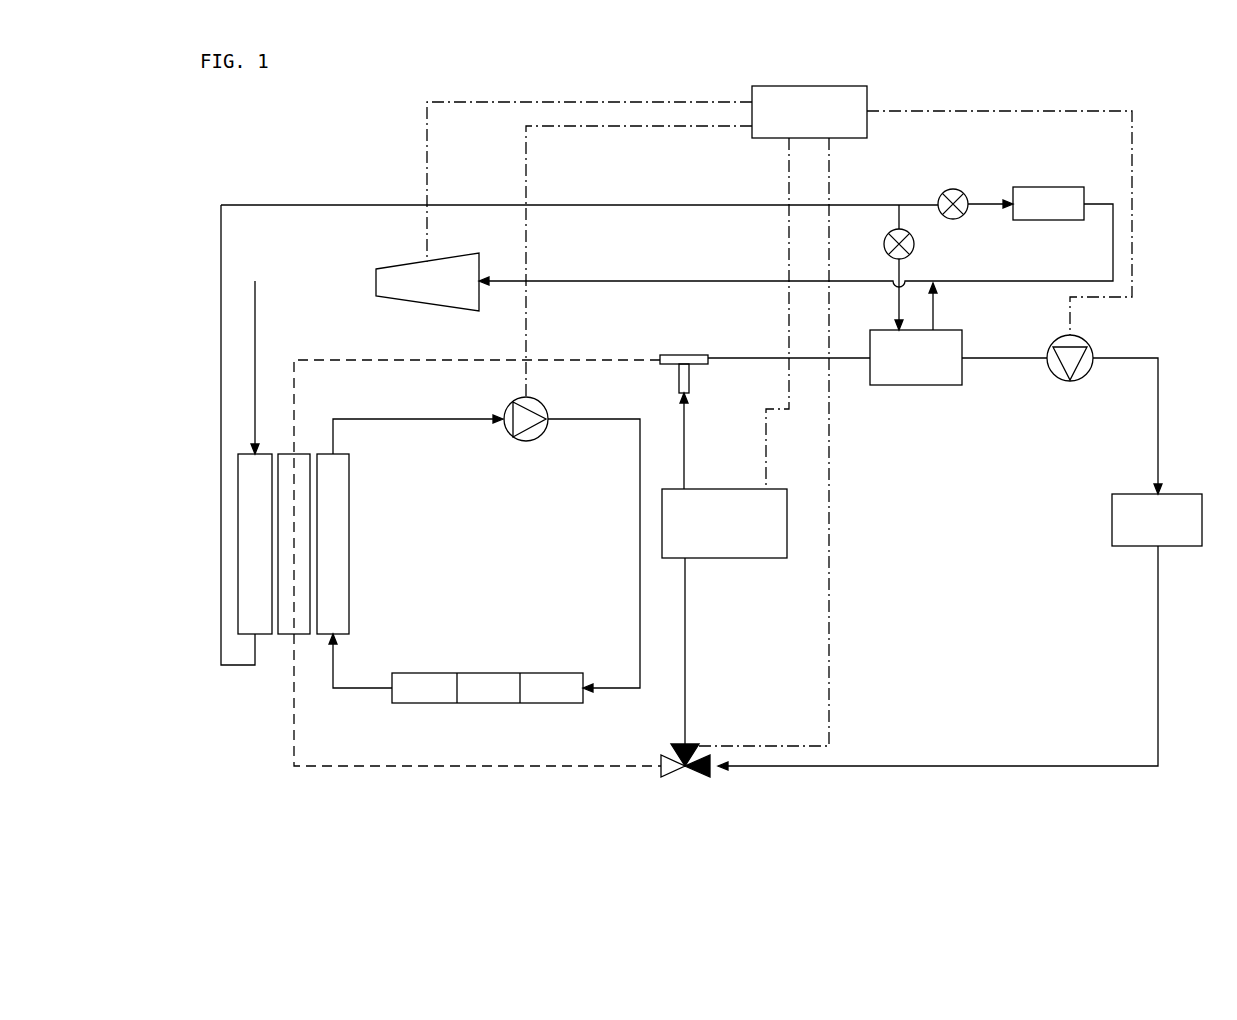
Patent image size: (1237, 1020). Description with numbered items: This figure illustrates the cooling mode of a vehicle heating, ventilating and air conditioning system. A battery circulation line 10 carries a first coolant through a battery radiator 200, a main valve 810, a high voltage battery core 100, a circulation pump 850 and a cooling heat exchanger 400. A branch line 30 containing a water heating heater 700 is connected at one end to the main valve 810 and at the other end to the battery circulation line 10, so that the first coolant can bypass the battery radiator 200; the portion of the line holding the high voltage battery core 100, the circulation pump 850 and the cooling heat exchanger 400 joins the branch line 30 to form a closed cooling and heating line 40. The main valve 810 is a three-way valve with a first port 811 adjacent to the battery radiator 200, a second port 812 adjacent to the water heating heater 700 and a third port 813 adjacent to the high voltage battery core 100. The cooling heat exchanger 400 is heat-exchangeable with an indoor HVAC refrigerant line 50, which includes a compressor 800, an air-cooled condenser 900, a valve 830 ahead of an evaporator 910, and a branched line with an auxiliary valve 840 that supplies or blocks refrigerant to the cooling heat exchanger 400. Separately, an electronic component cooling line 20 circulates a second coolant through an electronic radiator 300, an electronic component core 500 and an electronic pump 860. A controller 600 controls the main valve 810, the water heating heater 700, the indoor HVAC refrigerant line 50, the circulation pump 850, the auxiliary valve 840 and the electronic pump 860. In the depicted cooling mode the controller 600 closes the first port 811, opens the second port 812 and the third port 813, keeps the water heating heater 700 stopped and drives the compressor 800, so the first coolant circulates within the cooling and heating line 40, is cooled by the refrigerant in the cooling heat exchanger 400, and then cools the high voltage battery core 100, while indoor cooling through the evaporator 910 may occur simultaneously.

The battery circulation line 10 is at (605, 358).
The electronic component cooling line 20 is at (640, 535).
The branch line 30 is at (684, 440).
The cooling and heating line 40 is at (1158, 648).
The indoor HVAC refrigerant line 50 is at (658, 205).
The high voltage battery core 100 is at (1112, 527).
The battery radiator 200 is at (302, 452).
The electronic radiator 300 is at (349, 550).
The cooling heat exchanger 400 is at (915, 386).
The electronic component core 500 is at (485, 673).
The controller 600 is at (868, 93).
The water heating heater 700 is at (745, 558).
The compressor 800 is at (393, 297).
The main valve 810 is at (676, 745).
The first port 811 is at (661, 770).
The second port 812 is at (691, 745).
The third port 813 is at (710, 772).
The first valve 830 is at (953, 189).
The auxiliary valve 840 is at (914, 243).
The circulation pump 850 is at (1058, 381).
The electronic pump 860 is at (522, 441).
The air-cooled condenser 900 is at (262, 636).
The evaporator 910 is at (1058, 187).